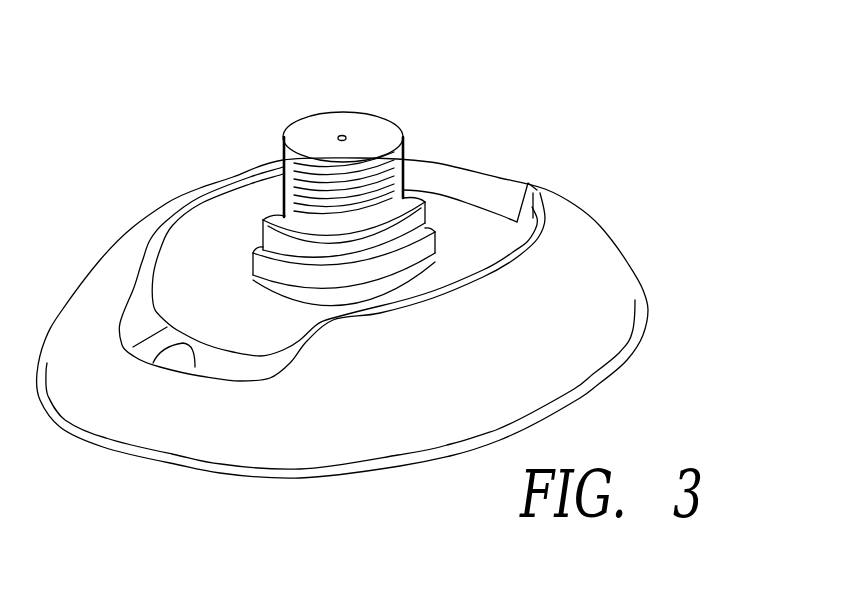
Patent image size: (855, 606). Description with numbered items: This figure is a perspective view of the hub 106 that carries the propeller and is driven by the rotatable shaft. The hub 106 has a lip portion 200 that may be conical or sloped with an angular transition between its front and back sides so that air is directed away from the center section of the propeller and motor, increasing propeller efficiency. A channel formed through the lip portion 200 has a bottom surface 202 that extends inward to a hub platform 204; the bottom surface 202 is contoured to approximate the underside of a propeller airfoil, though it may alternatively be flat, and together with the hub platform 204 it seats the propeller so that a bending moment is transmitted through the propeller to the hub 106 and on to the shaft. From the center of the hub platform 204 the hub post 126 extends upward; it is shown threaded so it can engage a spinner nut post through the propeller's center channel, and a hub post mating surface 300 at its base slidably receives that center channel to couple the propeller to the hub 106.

The hub 106 is at (383, 258).
The hub post 126 is at (307, 145).
The lip portion 200 is at (604, 272).
The bottom surface 202 is at (490, 183).
The hub platform 204 is at (207, 262).
The hub post mating surface 300 is at (370, 267).